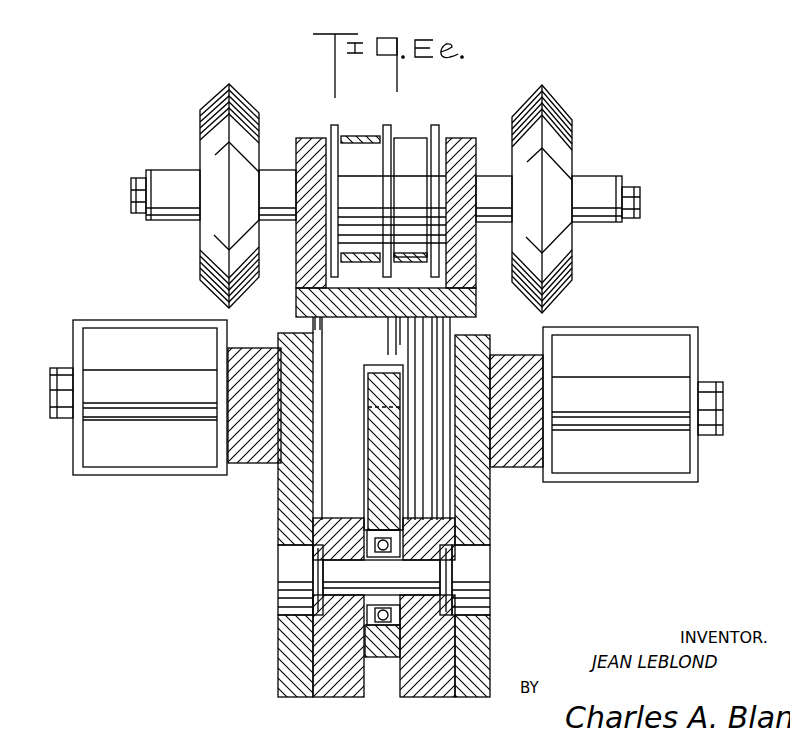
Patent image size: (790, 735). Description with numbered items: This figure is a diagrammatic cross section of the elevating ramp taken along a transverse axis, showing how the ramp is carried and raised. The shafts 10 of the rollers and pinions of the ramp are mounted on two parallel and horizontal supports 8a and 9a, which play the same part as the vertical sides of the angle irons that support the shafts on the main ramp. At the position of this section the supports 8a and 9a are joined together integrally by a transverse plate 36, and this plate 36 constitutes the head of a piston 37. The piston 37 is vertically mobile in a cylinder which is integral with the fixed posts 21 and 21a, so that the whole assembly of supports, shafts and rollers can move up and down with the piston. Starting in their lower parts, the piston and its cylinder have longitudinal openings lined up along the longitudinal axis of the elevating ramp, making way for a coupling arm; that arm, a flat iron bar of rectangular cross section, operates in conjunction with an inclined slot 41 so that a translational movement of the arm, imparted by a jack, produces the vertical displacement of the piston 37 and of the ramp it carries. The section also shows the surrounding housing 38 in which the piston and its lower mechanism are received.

The shaft 10 is at (163, 173).
The parallel support 9a is at (307, 138).
The parallel support 8a is at (468, 140).
The fixed post 21 is at (118, 322).
The fixed post 21a is at (632, 327).
The piston 37 is at (310, 322).
The transverse plate 36 is at (477, 300).
The inclined slot 41 is at (368, 496).
The housing 38 is at (492, 513).